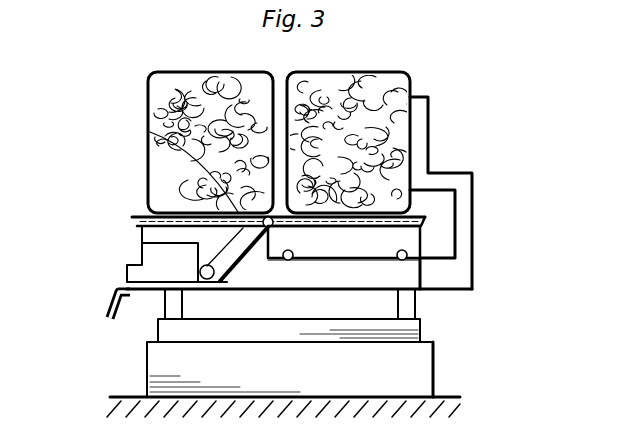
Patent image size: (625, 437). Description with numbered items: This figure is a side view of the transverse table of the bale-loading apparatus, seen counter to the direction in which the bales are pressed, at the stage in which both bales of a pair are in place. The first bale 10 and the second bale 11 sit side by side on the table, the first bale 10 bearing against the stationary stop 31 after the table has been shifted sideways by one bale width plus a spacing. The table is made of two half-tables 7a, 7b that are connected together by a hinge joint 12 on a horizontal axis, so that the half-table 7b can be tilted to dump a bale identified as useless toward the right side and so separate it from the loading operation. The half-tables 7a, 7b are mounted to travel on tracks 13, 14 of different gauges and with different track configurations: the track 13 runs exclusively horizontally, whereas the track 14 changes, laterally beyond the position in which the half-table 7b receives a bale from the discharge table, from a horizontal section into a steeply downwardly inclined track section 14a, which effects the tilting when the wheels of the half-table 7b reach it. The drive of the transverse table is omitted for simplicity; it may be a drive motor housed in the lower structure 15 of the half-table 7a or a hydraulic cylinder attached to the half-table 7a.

The half-table 7a is at (420, 203).
The half-table 7b is at (147, 216).
The first bale 10 is at (411, 78).
The second bale 11 is at (161, 99).
The hinge joint 12 is at (150, 132).
The track 13 is at (157, 261).
The track 14 is at (148, 279).
The inclined track section 14a is at (113, 288).
The lower structure 15 is at (412, 237).
The stationary stop 31 is at (421, 123).